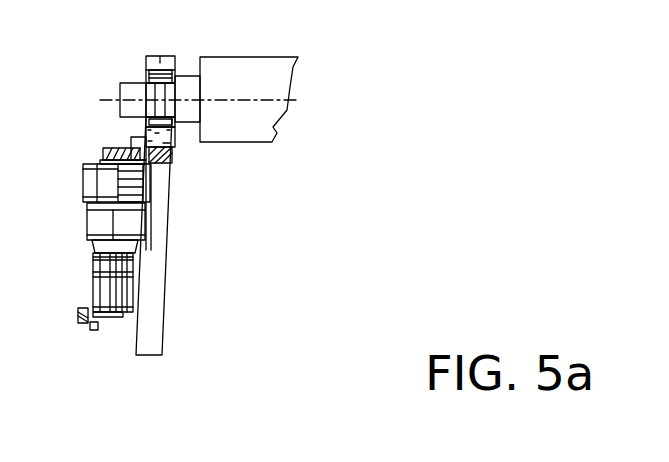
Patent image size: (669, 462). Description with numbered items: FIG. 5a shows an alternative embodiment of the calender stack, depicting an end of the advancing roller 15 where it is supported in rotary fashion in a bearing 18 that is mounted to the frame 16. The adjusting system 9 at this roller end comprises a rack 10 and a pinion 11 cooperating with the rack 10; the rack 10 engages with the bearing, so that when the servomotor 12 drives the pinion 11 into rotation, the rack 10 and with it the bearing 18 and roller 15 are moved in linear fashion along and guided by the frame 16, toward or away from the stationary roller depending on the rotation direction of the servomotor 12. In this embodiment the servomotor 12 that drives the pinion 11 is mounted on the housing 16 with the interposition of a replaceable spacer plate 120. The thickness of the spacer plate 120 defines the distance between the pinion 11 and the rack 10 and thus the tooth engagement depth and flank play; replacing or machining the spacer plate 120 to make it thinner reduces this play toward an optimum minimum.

The adjusting system 9 is at (178, 53).
The rack 10 is at (131, 141).
The pinion 11 is at (103, 155).
The servomotor 12 is at (83, 238).
The roller 15 is at (240, 57).
The frame 16 is at (168, 352).
The bearing 18 is at (141, 83).
The spacer plate 120 is at (152, 183).